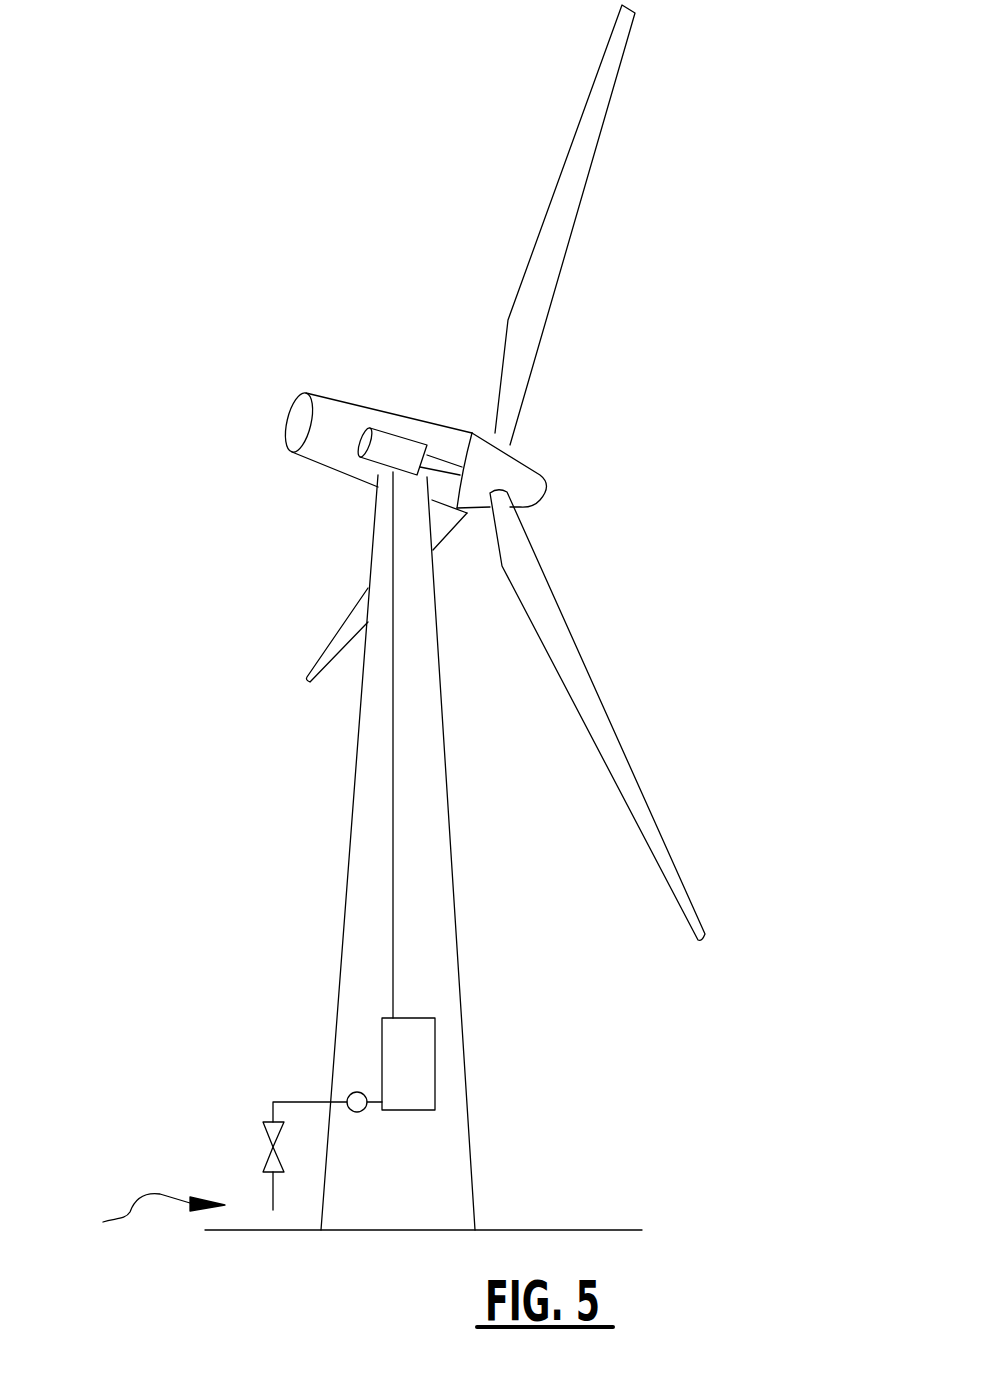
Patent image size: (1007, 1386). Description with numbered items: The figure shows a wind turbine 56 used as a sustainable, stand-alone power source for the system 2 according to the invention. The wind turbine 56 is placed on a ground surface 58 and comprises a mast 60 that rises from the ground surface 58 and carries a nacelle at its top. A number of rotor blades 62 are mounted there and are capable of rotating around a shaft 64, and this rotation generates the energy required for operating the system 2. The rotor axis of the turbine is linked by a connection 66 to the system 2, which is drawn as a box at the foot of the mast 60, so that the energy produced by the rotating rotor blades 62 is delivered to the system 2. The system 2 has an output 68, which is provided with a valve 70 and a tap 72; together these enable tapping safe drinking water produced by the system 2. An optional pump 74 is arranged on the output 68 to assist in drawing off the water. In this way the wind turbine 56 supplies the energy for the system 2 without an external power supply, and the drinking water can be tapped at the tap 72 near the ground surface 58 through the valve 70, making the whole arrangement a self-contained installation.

The system 2 is at (403, 1062).
The wind turbine 56 is at (693, 518).
The ground surface 58 is at (575, 1227).
The mast 60 is at (446, 768).
The rotor blades 62 is at (620, 761).
The shaft 64 is at (391, 343).
The connection 66 is at (393, 827).
The output 68 is at (292, 1098).
The valve 70 is at (270, 1150).
The tap 72 is at (145, 1217).
The pump 74 is at (355, 1111).